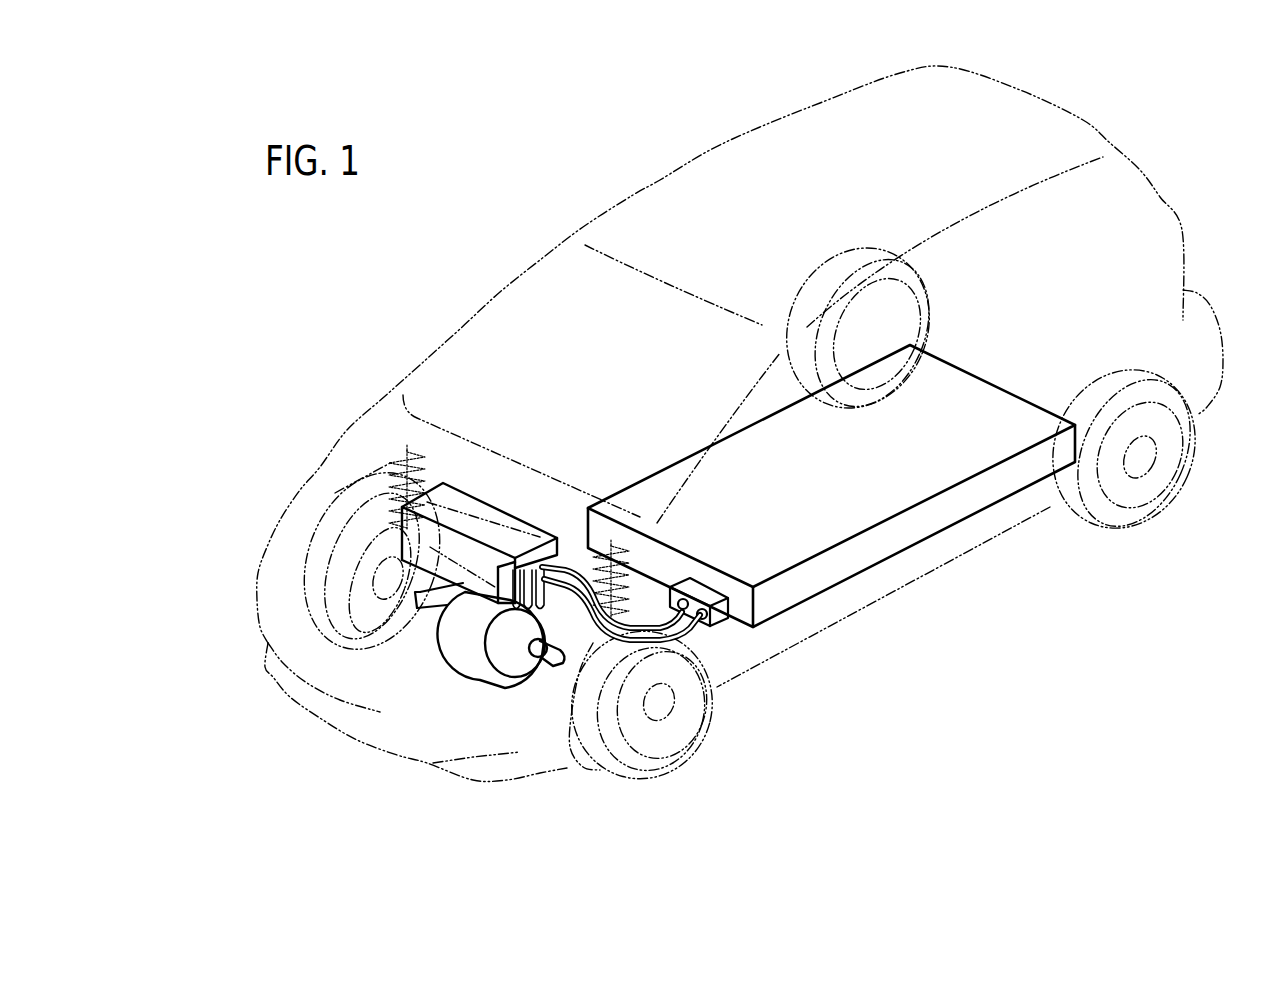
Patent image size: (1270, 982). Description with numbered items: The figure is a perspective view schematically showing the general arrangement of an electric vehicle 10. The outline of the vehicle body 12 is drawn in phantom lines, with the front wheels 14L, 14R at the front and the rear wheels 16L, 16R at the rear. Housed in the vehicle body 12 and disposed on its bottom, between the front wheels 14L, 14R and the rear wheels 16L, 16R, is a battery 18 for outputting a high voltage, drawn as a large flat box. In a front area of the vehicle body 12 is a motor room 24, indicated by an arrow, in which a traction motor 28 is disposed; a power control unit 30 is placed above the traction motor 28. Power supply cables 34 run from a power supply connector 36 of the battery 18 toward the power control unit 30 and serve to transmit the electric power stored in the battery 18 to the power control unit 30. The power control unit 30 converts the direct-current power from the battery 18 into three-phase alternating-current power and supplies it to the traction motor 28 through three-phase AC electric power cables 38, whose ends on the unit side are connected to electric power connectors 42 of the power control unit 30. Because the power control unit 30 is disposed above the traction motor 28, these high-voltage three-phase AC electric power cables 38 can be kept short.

The electric vehicle 10 is at (453, 226).
The vehicle body 12 is at (597, 220).
The front wheel 14R is at (307, 557).
The front wheel 14L is at (688, 752).
The rear wheel 16R is at (818, 276).
The rear wheel 16L is at (1163, 510).
The battery 18 is at (826, 590).
The motor room 24 is at (551, 560).
The traction motor 28 is at (477, 657).
The power control unit 30 is at (509, 507).
The power supply cables 34 is at (566, 580).
The power supply connector 36 is at (706, 590).
The three-phase AC electric power cables 38 is at (517, 580).
The electric power connectors 42 is at (446, 630).